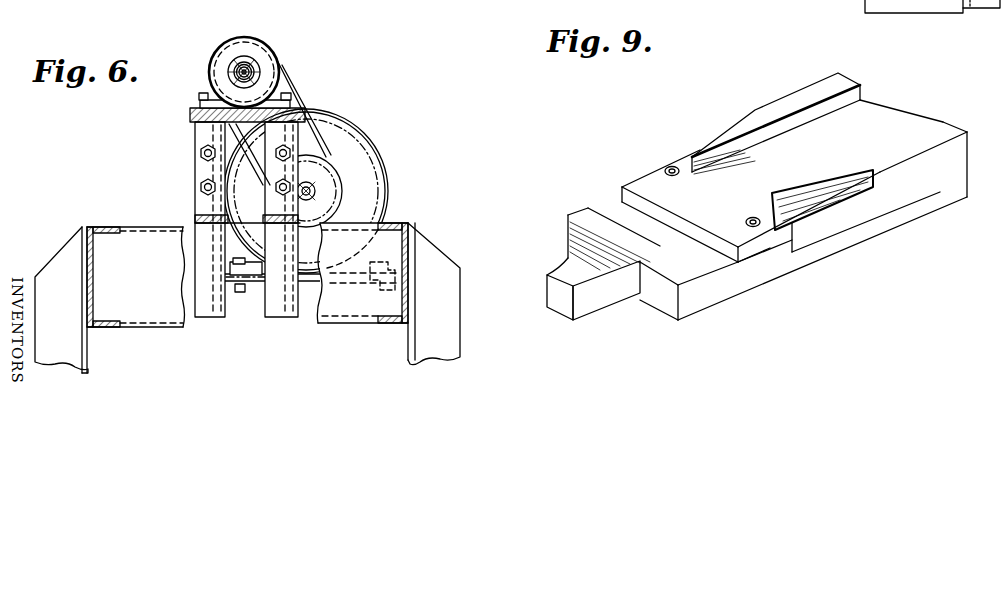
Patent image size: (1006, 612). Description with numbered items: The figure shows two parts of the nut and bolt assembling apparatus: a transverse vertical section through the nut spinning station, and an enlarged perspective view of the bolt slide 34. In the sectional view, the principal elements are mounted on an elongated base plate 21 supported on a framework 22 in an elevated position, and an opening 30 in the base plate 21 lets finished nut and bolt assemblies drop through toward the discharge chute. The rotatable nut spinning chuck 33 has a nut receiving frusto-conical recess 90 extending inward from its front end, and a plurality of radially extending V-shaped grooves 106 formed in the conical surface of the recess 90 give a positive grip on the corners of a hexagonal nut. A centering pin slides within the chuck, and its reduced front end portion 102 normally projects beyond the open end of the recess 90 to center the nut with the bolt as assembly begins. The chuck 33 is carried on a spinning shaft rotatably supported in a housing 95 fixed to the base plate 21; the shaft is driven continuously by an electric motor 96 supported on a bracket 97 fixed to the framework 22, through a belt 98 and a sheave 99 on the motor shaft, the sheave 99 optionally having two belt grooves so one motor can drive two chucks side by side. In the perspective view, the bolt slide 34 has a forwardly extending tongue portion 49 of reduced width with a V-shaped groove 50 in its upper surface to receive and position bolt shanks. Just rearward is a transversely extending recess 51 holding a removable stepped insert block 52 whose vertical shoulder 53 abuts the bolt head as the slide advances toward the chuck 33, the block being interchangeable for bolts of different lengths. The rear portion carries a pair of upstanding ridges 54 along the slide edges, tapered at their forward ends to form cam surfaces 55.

In FIG. 6, the base plate 21 is at (190, 112).
In FIG. 6, the framework 22 is at (200, 157).
In FIG. 6, the opening 30 is at (224, 135).
In FIG. 6, the nut spinning chuck 33 is at (257, 63).
In FIG. 9, the bolt slide 34 is at (808, 155).
In FIG. 9, the tongue portion 49 is at (600, 294).
In FIG. 9, the V-shaped groove 50 is at (566, 265).
In FIG. 9, the recess 51 is at (748, 272).
In FIG. 9, the insert block 52 is at (770, 243).
In FIG. 9, the shoulder 53 is at (623, 193).
In FIG. 9, the upstanding ridges 54 is at (833, 88).
In FIG. 9, the cam surfaces 55 is at (730, 127).
In FIG. 6, the frusto-conical recess 90 is at (263, 77).
In FIG. 6, the housing 95 is at (241, 44).
In FIG. 6, the electric motor 96 is at (357, 162).
In FIG. 6, the bracket 97 is at (313, 280).
In FIG. 6, the belt 98 is at (317, 132).
In FIG. 6, the sheave 99 is at (318, 192).
In FIG. 6, the reduced front end portion 102 is at (231, 64).
In FIG. 6, the V-shaped grooves 106 is at (231, 77).